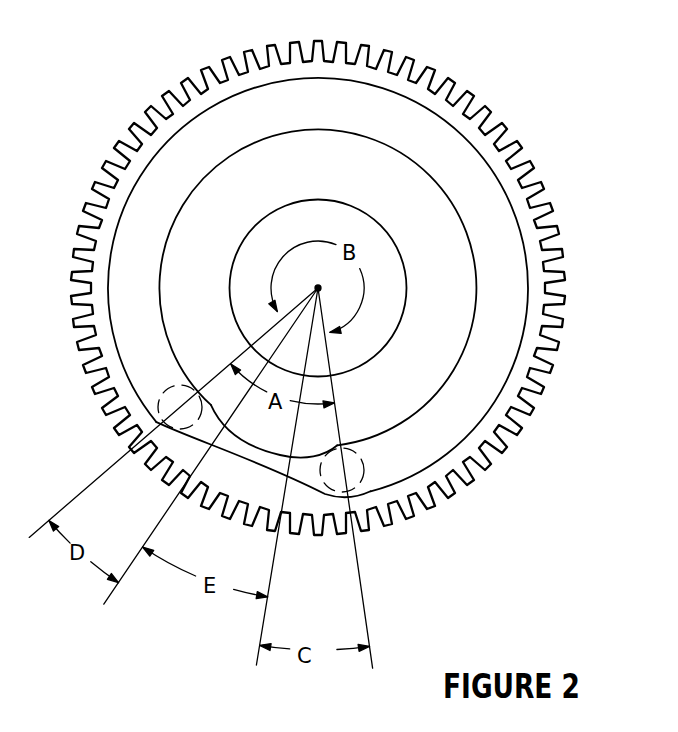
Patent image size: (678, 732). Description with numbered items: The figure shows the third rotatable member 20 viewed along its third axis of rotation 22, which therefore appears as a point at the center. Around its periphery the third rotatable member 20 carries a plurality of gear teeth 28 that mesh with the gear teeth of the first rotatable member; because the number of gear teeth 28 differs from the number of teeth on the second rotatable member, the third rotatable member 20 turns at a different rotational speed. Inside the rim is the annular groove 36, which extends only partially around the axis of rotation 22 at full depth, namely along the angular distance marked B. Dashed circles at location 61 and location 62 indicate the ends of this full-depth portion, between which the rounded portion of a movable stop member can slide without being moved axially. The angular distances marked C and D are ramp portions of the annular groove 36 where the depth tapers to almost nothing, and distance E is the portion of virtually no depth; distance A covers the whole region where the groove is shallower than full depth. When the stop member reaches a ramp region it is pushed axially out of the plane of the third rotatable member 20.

The gear teeth 28 is at (440, 80).
The annular groove 36 is at (424, 151).
The third rotatable member 20 is at (222, 248).
The third axis of rotation 22 is at (318, 288).
The location 61 is at (170, 390).
The location 62 is at (357, 463).